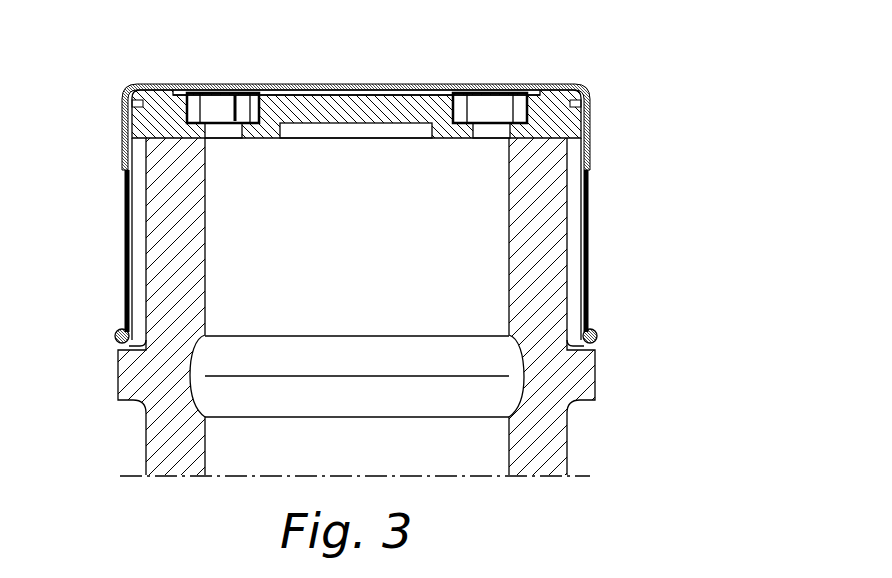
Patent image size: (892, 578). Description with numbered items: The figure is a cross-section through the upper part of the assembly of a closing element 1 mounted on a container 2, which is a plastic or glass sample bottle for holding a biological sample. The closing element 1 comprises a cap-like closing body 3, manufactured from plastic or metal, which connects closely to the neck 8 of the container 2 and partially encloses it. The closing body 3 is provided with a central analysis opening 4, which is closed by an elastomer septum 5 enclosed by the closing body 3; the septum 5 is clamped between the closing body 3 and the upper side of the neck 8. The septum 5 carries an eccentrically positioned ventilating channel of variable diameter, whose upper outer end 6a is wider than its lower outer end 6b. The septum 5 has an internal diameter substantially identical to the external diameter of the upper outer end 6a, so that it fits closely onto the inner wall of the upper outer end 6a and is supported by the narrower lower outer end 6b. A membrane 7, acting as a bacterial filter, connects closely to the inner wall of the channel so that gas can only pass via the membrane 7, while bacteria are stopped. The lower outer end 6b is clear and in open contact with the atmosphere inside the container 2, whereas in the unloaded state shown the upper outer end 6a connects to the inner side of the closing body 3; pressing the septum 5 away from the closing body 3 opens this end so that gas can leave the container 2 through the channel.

The closing element 1 is at (98, 73).
The container 2 is at (119, 437).
The closing body 3 is at (125, 202).
The central opening 4 is at (347, 88).
The septum 5 is at (410, 103).
The upper outer end of ventilating channel 6a is at (213, 107).
The lower outer end of ventilating channel 6b is at (225, 135).
The membrane 7 is at (235, 107).
The neck 8 is at (173, 273).